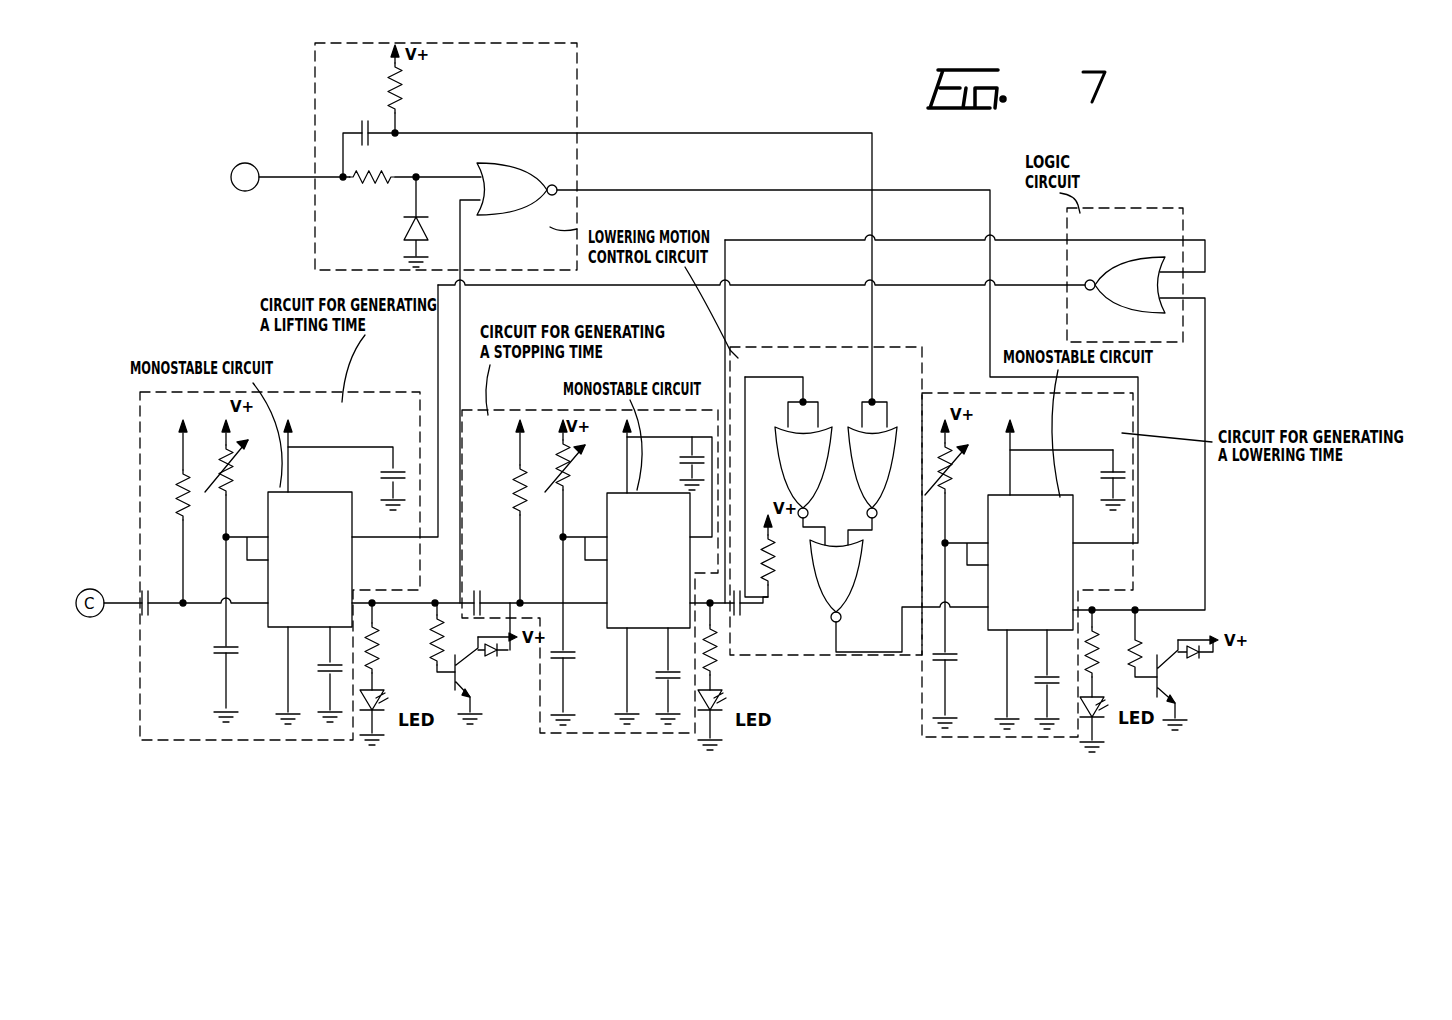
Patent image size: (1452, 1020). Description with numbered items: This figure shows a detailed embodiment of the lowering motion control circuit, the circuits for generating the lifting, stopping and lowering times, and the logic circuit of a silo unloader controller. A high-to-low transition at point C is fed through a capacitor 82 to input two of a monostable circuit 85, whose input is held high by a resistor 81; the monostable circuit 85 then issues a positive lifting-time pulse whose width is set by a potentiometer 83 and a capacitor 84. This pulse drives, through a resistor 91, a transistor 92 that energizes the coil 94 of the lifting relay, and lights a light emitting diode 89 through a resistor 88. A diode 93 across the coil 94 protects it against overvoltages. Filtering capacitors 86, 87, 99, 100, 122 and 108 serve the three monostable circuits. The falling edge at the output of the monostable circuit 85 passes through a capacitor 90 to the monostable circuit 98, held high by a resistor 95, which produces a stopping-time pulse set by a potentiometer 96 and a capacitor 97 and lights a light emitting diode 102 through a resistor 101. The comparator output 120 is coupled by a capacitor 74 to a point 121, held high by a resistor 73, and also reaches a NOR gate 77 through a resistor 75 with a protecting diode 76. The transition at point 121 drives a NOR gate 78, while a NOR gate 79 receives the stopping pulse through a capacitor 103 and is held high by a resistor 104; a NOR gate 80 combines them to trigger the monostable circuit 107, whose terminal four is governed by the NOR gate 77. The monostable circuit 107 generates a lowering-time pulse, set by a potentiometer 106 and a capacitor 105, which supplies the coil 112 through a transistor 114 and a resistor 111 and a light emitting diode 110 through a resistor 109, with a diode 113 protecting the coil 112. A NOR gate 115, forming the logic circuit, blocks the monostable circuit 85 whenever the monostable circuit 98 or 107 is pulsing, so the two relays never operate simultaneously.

The resistor 73 is at (390, 86).
The capacitor 74 is at (370, 140).
The resistor 75 is at (365, 183).
The protecting diode 76 is at (428, 228).
The NOR gate 77 is at (494, 170).
The NOR gate 78 is at (888, 427).
The NOR gate 79 is at (822, 432).
The NOR gate 80 is at (862, 581).
The resistor 81 is at (180, 480).
The capacitor 82 is at (148, 616).
The potentiometer 83 is at (240, 472).
The capacitor 84 is at (218, 660).
The monostable circuit 85 is at (320, 492).
The filtering capacitor 86 is at (396, 470).
The filtering capacitor 87 is at (334, 665).
The resistor 88 is at (377, 638).
The light emitting diode 89 is at (378, 690).
The capacitor 90 is at (472, 608).
The resistor 91 is at (432, 638).
The transistor 92 is at (451, 684).
The diode 93 is at (494, 660).
The coil 94 is at (512, 612).
The resistor 95 is at (515, 500).
The potentiometer 96 is at (556, 460).
The capacitor 97 is at (558, 640).
The monostable circuit 98 is at (650, 496).
The filtering capacitor 99 is at (690, 452).
The filtering capacitor 100 is at (674, 670).
The resistor 101 is at (716, 665).
The light emitting diode 102 is at (716, 696).
The capacitor 103 is at (742, 612).
The resistor 104 is at (776, 548).
The capacitor 105 is at (938, 656).
The potentiometer 106 is at (956, 448).
The monostable circuit 107 is at (1034, 495).
The filtering capacitor 108 is at (1050, 676).
The resistor 109 is at (1098, 645).
The light emitting diode 110 is at (1098, 697).
The resistor 111 is at (1133, 643).
The coil 112 is at (1178, 636).
The diode 113 is at (1200, 660).
The transistor 114 is at (1172, 690).
The NOR gate 115 is at (1130, 312).
The output of the comparator 120 is at (245, 177).
The point 121 is at (396, 132).
The filtering capacitor 122 is at (183, 598).